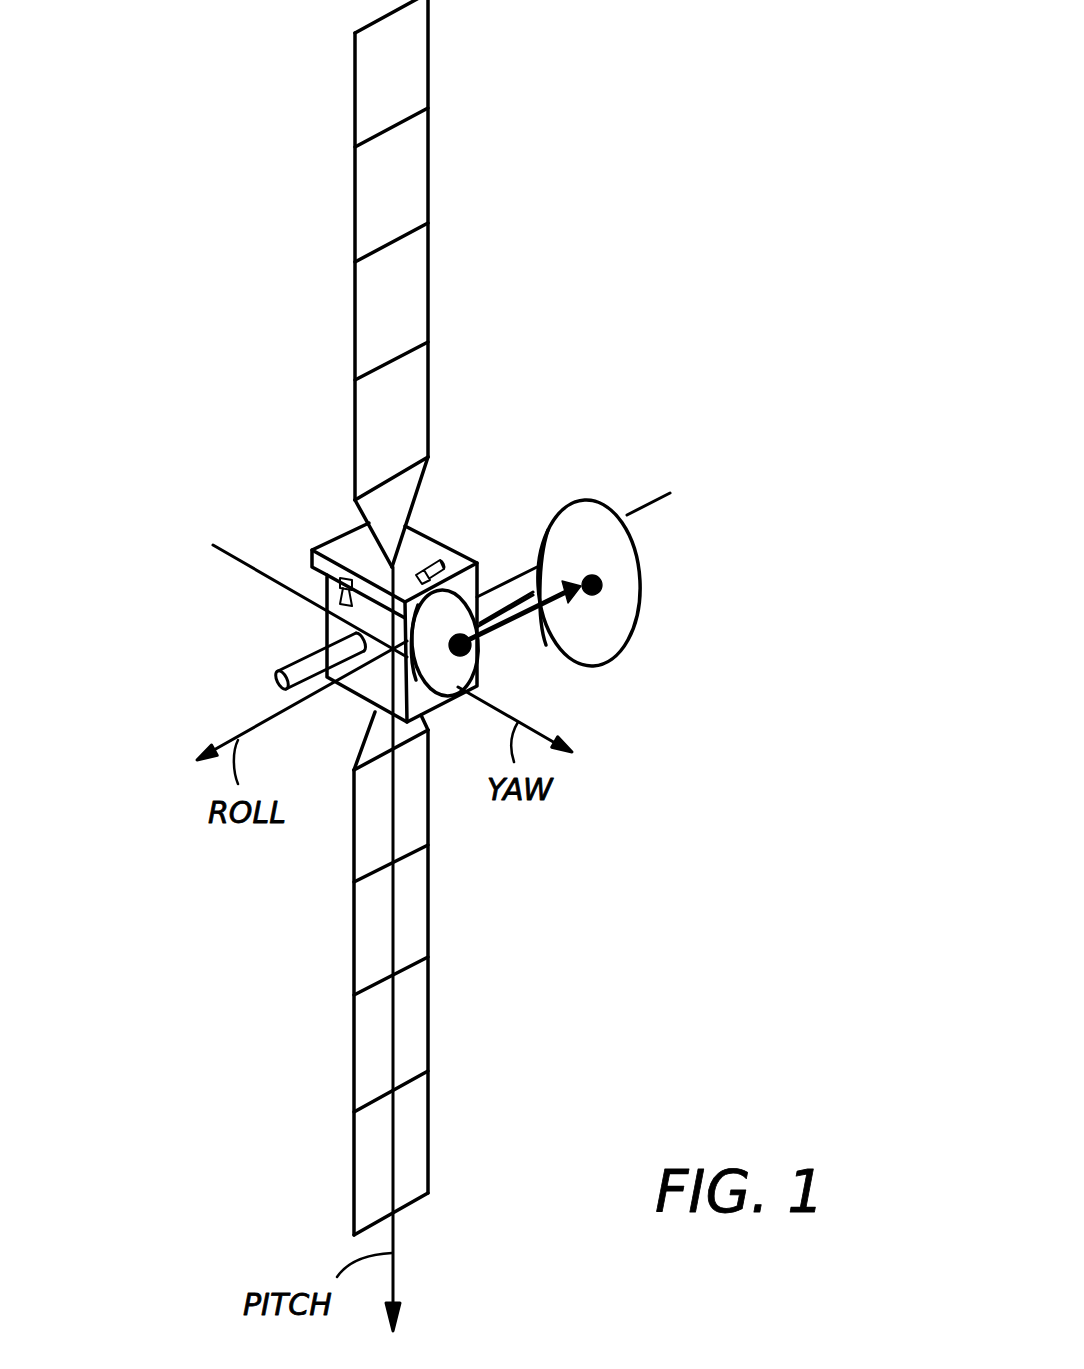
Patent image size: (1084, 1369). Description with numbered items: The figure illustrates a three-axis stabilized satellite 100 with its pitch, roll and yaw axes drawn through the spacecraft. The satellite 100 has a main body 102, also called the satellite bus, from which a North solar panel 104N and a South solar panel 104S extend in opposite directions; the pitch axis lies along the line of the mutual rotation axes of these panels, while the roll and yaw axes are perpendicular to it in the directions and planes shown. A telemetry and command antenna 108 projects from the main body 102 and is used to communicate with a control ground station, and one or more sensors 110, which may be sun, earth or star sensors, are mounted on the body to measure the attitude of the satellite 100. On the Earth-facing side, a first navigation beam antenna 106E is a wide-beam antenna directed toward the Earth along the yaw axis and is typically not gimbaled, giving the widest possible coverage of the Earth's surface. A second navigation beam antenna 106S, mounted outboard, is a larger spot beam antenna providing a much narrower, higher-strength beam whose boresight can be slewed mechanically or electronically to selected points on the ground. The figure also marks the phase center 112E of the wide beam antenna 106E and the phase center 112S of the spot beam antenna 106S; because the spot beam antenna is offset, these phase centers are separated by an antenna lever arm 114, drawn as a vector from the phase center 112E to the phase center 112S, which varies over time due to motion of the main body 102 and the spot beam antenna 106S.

The satellite 100 is at (525, 228).
The main body 102 is at (372, 688).
The North solar panel 104N is at (407, 178).
The South solar panel 104S is at (418, 1017).
The first navigation beam antenna 106E is at (425, 698).
The second navigation beam antenna 106S is at (600, 500).
The telemetry and command antenna 108 is at (303, 658).
The sensors 110 is at (343, 578).
The phase center of the wide beam antenna 112E is at (466, 652).
The phase center of the spot beam antenna 112S is at (596, 590).
The antenna lever arm 114 is at (510, 627).